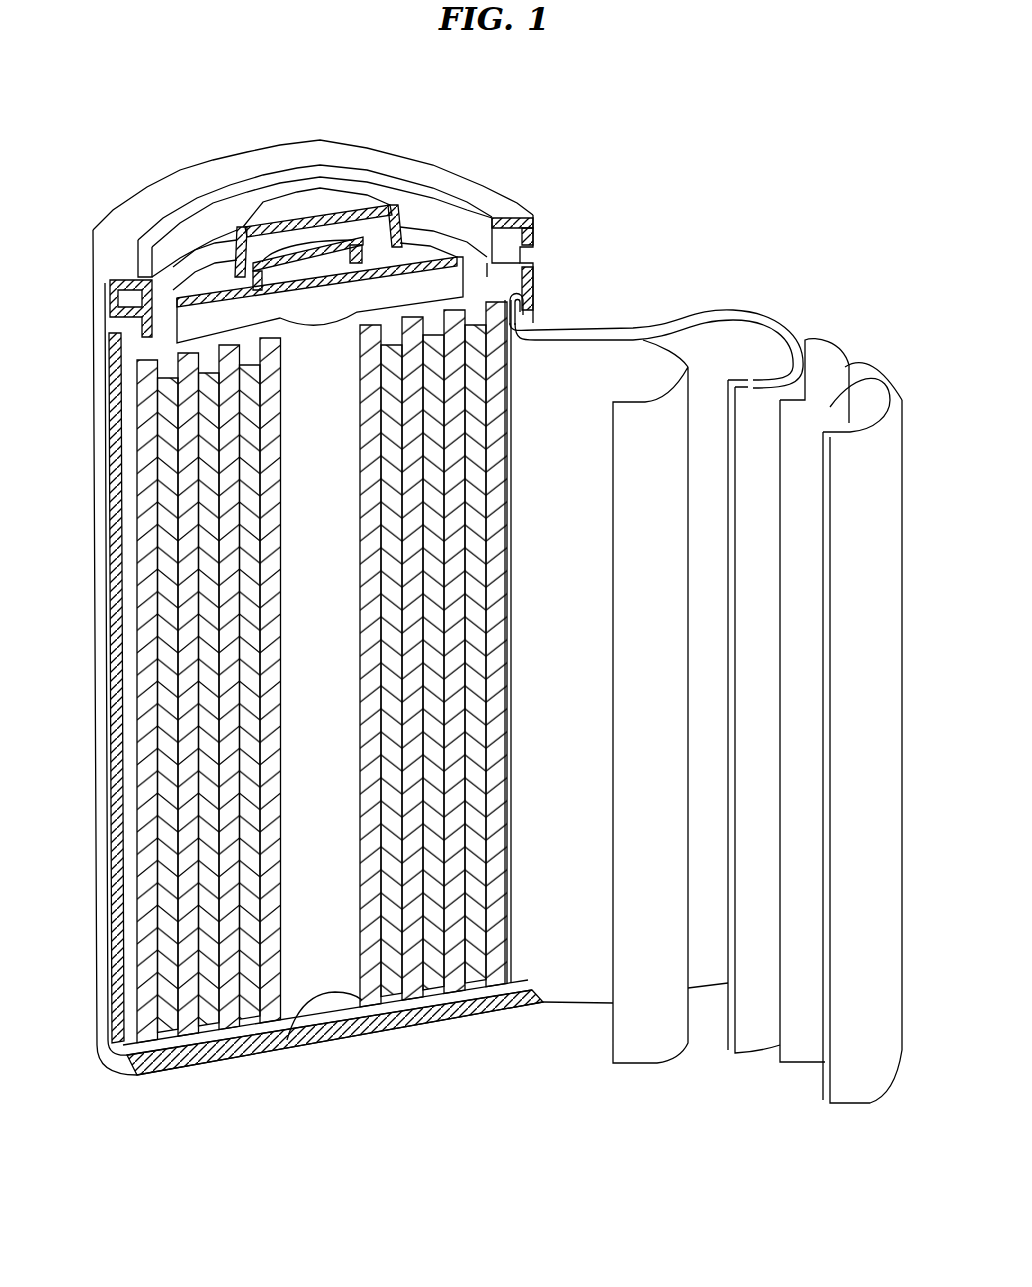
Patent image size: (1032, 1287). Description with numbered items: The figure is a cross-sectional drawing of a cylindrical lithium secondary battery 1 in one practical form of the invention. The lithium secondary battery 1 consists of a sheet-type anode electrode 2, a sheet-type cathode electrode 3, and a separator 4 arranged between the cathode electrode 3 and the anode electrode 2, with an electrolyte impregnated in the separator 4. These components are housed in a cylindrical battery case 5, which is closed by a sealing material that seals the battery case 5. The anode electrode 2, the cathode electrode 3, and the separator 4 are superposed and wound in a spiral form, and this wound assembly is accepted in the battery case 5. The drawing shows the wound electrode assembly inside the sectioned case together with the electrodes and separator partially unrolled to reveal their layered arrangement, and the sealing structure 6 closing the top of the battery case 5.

The lithium secondary battery 1 is at (798, 297).
The anode electrode 2 is at (880, 1050).
The cathode electrode 3 is at (750, 397).
The separator 4 is at (830, 407).
The battery case 5 is at (92, 990).
The sealing plate 6 is at (335, 197).